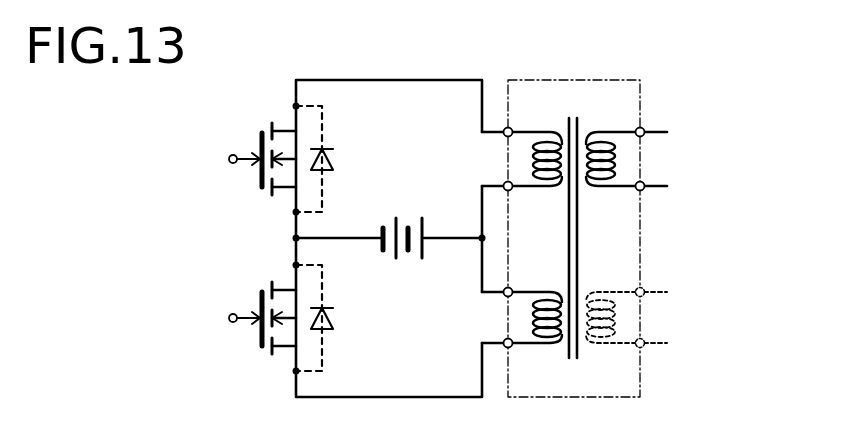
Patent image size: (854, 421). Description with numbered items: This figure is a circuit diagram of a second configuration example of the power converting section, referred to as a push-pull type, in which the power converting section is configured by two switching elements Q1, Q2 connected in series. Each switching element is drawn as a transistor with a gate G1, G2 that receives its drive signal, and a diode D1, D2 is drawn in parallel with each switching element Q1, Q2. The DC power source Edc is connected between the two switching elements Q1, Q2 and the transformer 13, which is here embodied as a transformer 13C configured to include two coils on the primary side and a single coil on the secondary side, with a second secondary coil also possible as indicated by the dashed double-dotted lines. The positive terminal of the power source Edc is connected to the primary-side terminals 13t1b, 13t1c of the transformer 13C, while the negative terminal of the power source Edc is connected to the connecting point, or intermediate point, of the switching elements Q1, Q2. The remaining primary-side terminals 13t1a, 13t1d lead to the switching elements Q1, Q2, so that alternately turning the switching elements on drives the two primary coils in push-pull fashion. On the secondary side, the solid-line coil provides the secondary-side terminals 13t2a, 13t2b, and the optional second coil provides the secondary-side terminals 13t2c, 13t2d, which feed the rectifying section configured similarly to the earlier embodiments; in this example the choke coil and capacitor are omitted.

The switching element Q1 is at (269, 146).
The switching element Q2 is at (269, 304).
The gate terminal of Q1 G1 is at (228, 162).
The gate terminal of Q2 G2 is at (228, 321).
The first diode D1 is at (331, 159).
The second diode D2 is at (331, 318).
The power source Edc is at (389, 224).
The transformer 13 is at (574, 211).
The transformer 13C is at (588, 80).
The primary-side terminal 13t1a is at (504, 129).
The primary-side terminal 13t1b is at (504, 183).
The primary-side terminal 13t1c is at (504, 296).
The primary-side terminal 13t1d is at (504, 348).
The secondary-side terminal 13t2a is at (644, 128).
The secondary-side terminal 13t2b is at (644, 182).
The secondary-side terminal 13t2c is at (644, 296).
The secondary-side terminal 13t2d is at (644, 347).